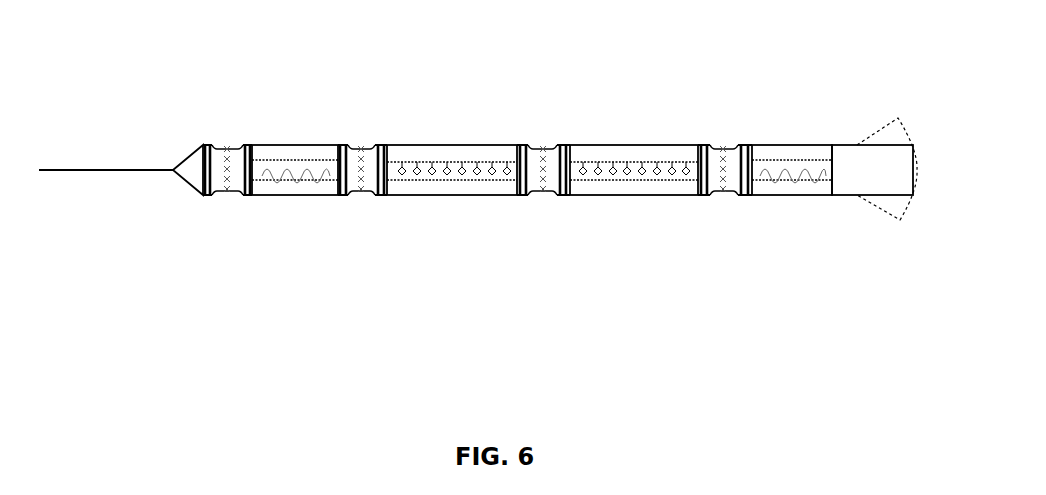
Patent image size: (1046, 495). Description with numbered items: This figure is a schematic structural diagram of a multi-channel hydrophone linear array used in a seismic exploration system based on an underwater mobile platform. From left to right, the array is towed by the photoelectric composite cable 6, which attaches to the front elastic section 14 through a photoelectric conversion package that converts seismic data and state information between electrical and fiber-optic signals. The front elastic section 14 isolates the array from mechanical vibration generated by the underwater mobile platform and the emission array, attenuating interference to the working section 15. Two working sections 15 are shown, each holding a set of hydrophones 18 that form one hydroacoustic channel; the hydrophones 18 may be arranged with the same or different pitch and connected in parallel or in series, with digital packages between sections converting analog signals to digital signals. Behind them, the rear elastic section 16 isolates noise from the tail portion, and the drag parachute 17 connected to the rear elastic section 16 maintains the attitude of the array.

The photoelectric composite cable 6 is at (102, 170).
The front elastic section 14 is at (287, 145).
The working section 15 is at (542, 156).
The rear elastic section 16 is at (795, 145).
The drag parachute 17 is at (898, 168).
The hydrophone 18 is at (447, 170).